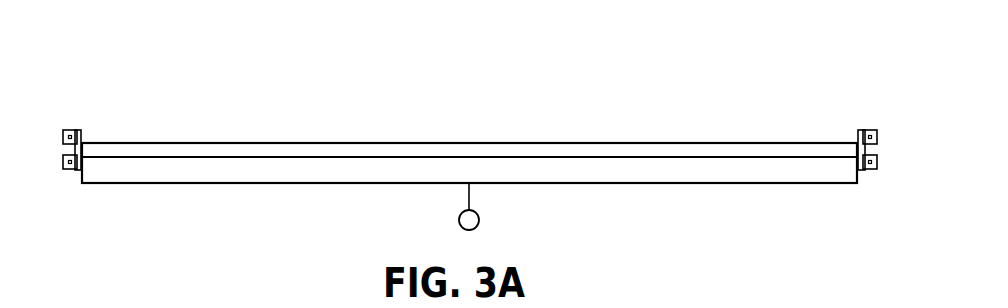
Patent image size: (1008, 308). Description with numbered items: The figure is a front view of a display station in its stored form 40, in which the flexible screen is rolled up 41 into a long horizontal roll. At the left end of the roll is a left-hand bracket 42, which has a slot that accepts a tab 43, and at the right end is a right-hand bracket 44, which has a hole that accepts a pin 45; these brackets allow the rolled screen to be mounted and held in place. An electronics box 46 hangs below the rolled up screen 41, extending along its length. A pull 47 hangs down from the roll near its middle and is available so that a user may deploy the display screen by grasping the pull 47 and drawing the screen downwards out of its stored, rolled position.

The display station in stored form 40 is at (253, 107).
The flexible screen 41 is at (507, 143).
The left-hand bracket 42 is at (74, 130).
The tab 43 is at (66, 152).
The right-hand bracket 44 is at (868, 128).
The pin 45 is at (877, 154).
The electronics box 46 is at (630, 183).
The pull 47 is at (470, 205).